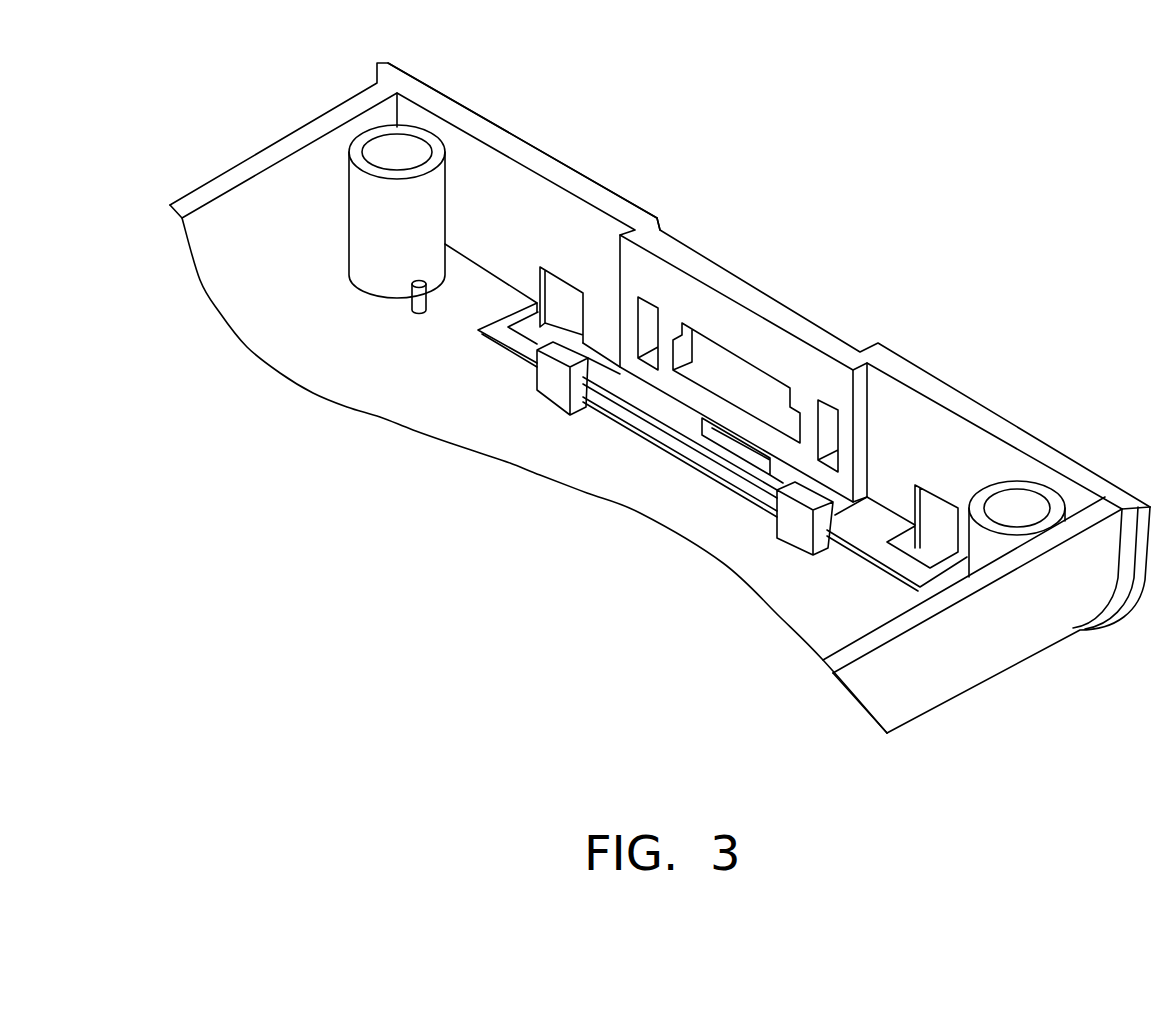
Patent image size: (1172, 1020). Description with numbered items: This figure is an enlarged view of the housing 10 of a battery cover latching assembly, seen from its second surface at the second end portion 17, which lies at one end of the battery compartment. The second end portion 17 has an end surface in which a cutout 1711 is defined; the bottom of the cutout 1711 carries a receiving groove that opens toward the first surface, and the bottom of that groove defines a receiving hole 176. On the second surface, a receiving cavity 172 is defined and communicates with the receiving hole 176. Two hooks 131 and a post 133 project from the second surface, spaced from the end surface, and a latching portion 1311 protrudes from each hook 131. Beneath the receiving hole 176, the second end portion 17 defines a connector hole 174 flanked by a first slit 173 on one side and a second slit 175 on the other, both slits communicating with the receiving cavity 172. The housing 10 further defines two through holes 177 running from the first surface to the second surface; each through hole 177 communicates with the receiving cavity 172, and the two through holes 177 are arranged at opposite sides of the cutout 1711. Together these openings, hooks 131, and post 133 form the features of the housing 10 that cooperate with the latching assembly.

The housing 10 is at (235, 105).
The second end portion 17 is at (508, 148).
The cutout 1711 is at (673, 238).
The post 133 is at (413, 307).
The through holes 177 is at (562, 303).
The first slit 173 is at (650, 313).
The connector hole 174 is at (745, 377).
The second slit 175 is at (830, 410).
The hooks 131 is at (625, 452).
The latching portion 1311 is at (607, 413).
The receiving hole 176 is at (727, 443).
The receiving cavity 172 is at (848, 608).